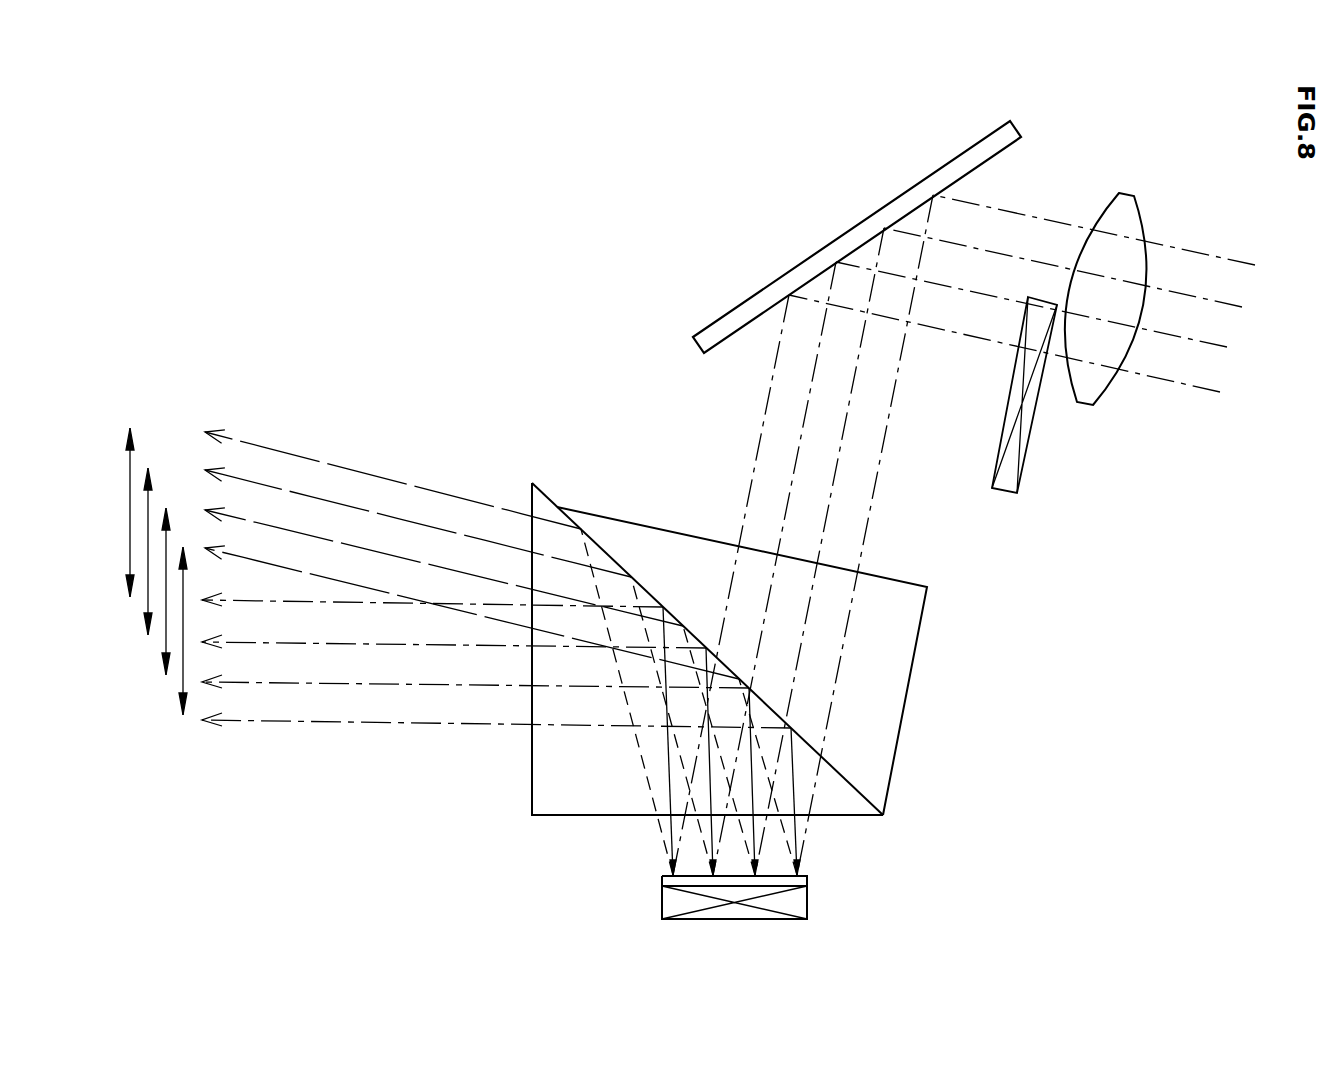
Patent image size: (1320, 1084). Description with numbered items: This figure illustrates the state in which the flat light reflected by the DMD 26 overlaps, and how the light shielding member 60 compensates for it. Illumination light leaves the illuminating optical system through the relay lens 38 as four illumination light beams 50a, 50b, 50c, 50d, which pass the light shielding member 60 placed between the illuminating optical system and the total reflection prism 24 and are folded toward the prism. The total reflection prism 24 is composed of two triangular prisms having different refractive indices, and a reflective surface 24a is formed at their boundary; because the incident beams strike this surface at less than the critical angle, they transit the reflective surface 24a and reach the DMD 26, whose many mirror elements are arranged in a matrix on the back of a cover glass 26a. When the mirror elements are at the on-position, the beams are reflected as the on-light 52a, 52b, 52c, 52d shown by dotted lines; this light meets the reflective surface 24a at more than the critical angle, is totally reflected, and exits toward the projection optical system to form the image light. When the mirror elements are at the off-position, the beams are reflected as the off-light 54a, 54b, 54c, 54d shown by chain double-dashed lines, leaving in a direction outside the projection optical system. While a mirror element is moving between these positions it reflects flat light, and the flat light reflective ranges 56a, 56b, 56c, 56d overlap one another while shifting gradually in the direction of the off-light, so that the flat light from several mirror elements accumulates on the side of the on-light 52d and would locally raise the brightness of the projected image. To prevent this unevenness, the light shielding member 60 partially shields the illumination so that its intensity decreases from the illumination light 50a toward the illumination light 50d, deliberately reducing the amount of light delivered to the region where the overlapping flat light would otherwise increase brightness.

The total reflection prism 24 is at (614, 505).
The reflective surface 24a is at (864, 796).
The DMD 26 is at (807, 901).
The cover glass 26a is at (808, 877).
The relay lens 38 is at (1125, 193).
The illumination light 50a is at (1227, 261).
The illumination light 50b is at (1227, 304).
The illumination light 50c is at (1227, 347).
The illumination light 50d is at (1220, 392).
The on-light 52a is at (237, 721).
The on-light 52b is at (237, 683).
The on-light 52c is at (237, 643).
The on-light 52d is at (237, 601).
The off-light 54a is at (247, 558).
The off-light 54b is at (247, 519).
The off-light 54c is at (247, 481).
The off-light 54d is at (247, 443).
The flat light reflective range 56a is at (182, 686).
The flat light reflective range 56b is at (165, 646).
The flat light reflective range 56c is at (147, 608).
The flat light reflective range 56d is at (128, 568).
The light shielding member 60 is at (1004, 494).